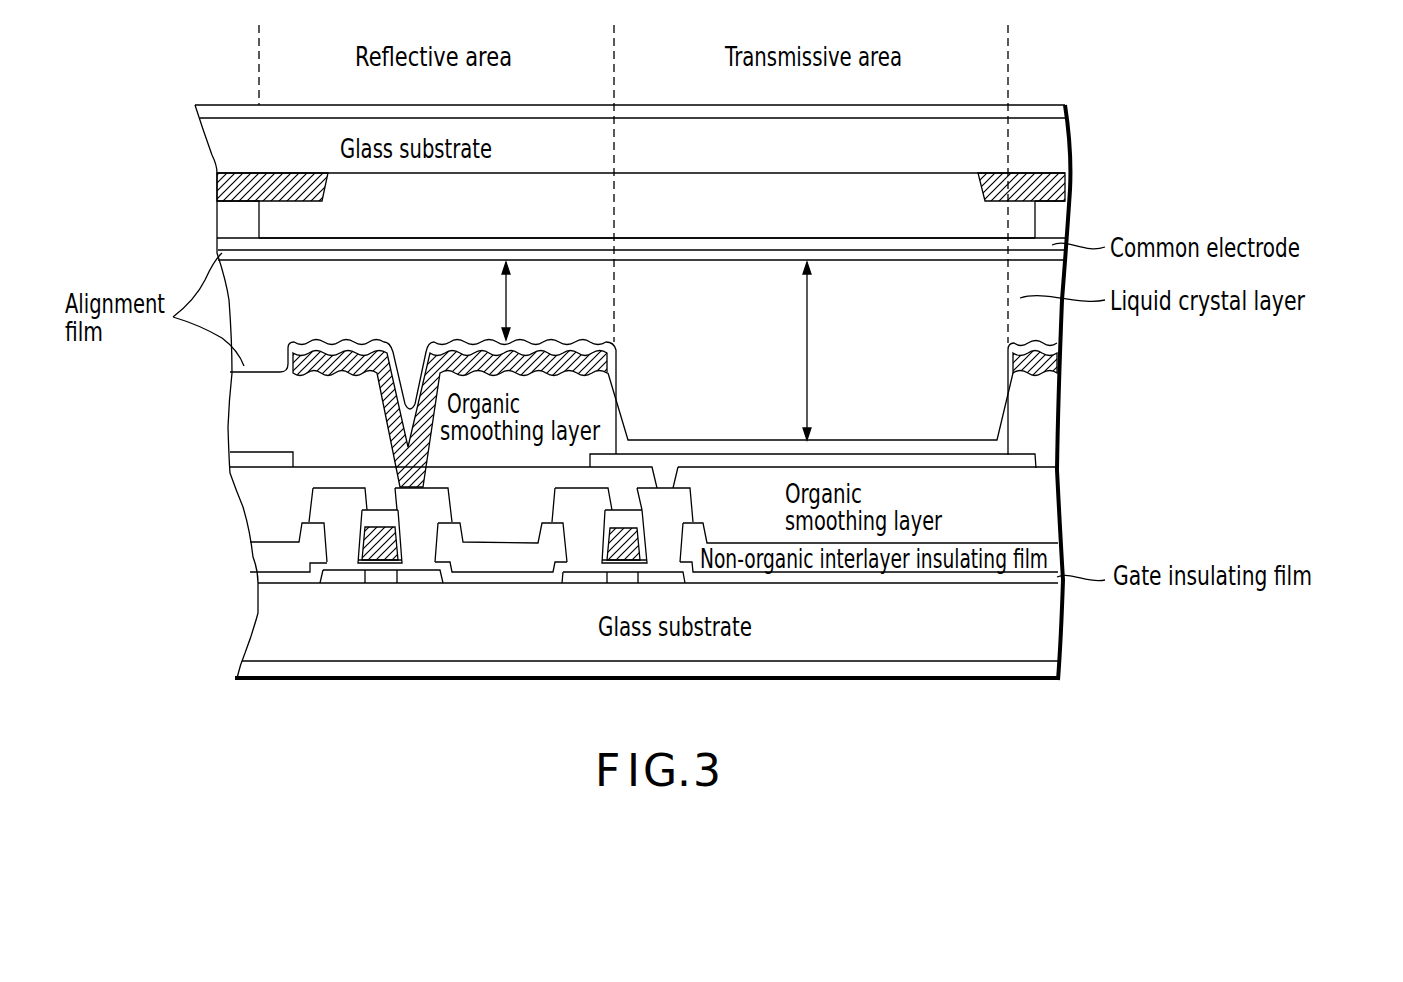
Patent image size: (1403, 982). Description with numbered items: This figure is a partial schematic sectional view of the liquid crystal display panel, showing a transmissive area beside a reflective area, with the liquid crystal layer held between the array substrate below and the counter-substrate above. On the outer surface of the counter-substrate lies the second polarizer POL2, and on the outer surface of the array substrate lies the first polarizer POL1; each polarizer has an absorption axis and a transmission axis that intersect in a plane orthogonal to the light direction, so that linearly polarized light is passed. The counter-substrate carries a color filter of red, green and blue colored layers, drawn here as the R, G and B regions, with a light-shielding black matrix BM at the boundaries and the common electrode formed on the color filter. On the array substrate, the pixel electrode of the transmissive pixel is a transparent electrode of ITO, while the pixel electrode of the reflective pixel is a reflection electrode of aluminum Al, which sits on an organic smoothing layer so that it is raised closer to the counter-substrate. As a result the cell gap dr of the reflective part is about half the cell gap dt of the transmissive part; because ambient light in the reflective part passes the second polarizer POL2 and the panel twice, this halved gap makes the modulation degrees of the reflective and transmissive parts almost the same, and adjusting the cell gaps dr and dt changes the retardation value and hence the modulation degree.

The second polarizer POL2 is at (1052, 115).
The black matrix BM is at (1065, 187).
The green color filter G is at (238, 219).
The red color filter R is at (647, 218).
The blue color filter B is at (1050, 219).
The cell gap of the reflective part dr is at (519, 301).
The cell gap of the transmissive part dt is at (820, 351).
The reflection electrode Al is at (1057, 363).
The transparent electrode ITO is at (1033, 460).
The first polarizer POL1 is at (1057, 667).